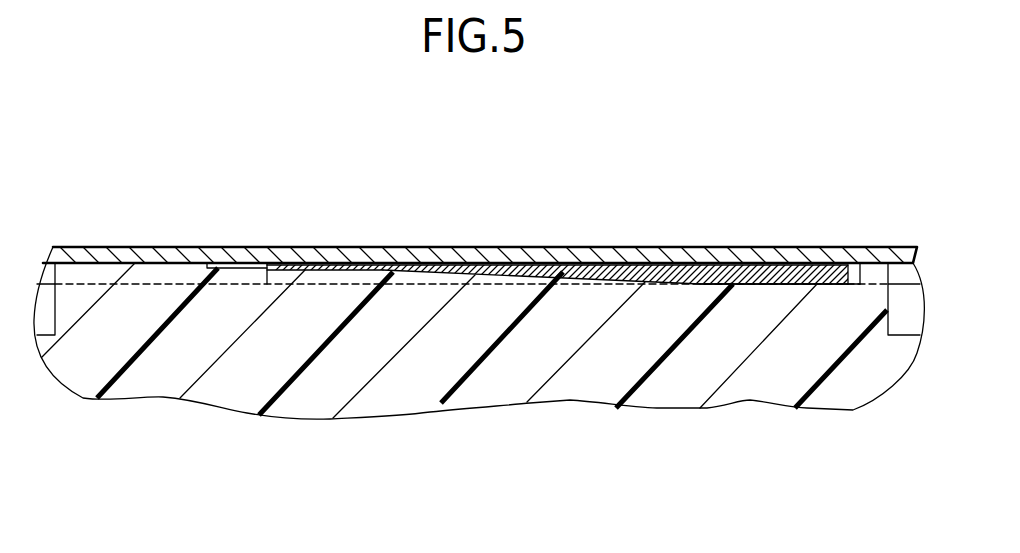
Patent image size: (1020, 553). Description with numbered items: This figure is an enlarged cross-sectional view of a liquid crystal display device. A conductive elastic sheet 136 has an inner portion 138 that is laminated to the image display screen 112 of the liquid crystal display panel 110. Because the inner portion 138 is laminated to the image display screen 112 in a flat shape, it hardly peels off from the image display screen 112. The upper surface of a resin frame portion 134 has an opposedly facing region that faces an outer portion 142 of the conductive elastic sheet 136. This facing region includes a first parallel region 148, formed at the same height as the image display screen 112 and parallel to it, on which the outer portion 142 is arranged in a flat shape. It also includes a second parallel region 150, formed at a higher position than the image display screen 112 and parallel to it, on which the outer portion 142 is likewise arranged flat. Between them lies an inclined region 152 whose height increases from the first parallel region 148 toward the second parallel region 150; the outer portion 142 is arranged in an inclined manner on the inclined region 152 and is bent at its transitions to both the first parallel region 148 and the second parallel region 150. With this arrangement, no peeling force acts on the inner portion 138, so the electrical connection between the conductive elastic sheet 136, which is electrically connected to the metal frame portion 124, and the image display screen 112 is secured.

The liquid crystal display panel 110 is at (903, 276).
The image display screen 112 is at (455, 277).
The metal frame portion 124 is at (520, 263).
The resin frame portion 134 is at (498, 390).
The conductive elastic sheet 136 is at (767, 288).
The inner portion 138 is at (417, 286).
The outer portion 142 is at (723, 286).
The first parallel region 148 is at (800, 265).
The second parallel region 150 is at (335, 266).
The inclined region 152 is at (595, 273).